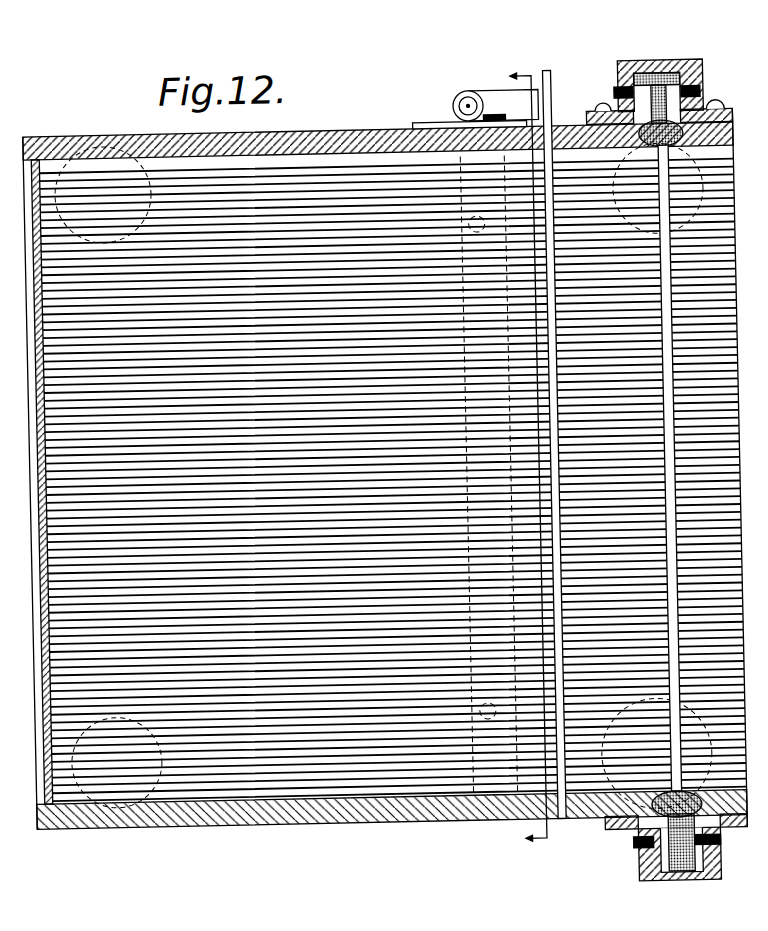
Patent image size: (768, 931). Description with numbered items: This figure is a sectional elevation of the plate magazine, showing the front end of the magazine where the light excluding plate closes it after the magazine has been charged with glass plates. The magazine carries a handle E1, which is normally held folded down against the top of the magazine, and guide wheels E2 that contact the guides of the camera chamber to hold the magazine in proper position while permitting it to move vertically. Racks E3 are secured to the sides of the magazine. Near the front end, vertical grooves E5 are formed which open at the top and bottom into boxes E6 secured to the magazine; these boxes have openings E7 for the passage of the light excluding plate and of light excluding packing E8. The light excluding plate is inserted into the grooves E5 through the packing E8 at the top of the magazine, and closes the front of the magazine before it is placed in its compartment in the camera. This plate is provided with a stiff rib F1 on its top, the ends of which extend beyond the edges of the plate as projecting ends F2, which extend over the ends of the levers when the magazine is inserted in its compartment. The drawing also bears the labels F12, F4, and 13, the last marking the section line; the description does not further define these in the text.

The top rail of frame F12 is at (87, 142).
The stiff rib F1 is at (424, 115).
The projecting end of the rib F2 is at (142, 787).
The slats F4 is at (342, 732).
The handle E1 is at (538, 485).
The guide wheel E2 is at (600, 116).
The rack E3 is at (448, 802).
The vertical groove E5 is at (556, 809).
The box E6 is at (690, 86).
The opening E7 is at (684, 64).
The light excluding packing E8 is at (614, 91).
The section line 13- 13 is at (512, 459).